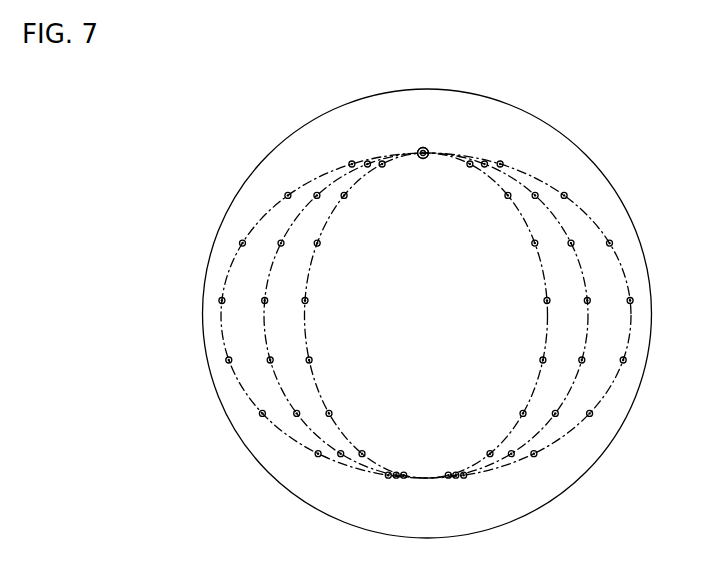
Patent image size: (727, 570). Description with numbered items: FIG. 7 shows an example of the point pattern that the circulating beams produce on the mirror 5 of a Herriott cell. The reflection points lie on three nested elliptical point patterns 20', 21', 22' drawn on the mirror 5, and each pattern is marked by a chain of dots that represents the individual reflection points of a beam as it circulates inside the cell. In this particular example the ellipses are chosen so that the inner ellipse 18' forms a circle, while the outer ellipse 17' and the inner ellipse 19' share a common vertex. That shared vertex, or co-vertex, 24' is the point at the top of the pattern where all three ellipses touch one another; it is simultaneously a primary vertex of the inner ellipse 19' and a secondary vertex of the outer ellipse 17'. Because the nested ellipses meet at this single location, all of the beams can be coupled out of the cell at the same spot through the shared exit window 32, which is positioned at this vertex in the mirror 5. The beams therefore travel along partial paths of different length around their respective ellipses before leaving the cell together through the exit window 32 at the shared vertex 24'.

The mirror 5 is at (586, 138).
The outer ellipse 17' is at (452, 319).
The inner ellipse 18' is at (481, 319).
The inner ellipse 19' is at (426, 319).
The elliptical point pattern 20' is at (459, 315).
The elliptical point pattern 21' is at (474, 315).
The elliptical point pattern 22' is at (426, 315).
The shared vertex 24' is at (423, 129).
The exit window 32 is at (423, 160).